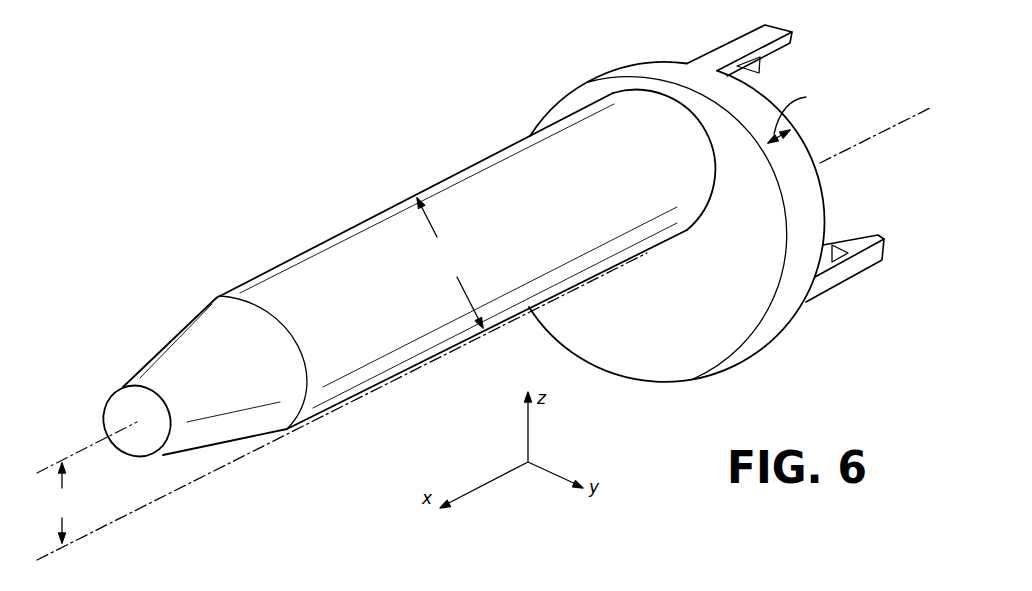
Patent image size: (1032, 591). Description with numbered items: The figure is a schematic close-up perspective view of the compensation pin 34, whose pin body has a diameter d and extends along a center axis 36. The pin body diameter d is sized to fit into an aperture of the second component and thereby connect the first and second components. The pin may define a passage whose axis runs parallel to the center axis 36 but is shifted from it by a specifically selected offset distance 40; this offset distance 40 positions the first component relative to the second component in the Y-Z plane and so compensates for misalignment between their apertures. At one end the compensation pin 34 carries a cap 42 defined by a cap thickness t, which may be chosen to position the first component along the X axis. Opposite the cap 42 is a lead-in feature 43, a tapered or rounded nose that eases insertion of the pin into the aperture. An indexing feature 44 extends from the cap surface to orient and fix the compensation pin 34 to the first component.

The compensation pin 34 is at (305, 200).
The center axis 36 is at (177, 492).
The offset distance 40 is at (64, 503).
The cap 42 is at (787, 313).
The lead-in feature 43 is at (135, 340).
The indexing feature 44 is at (722, 22).